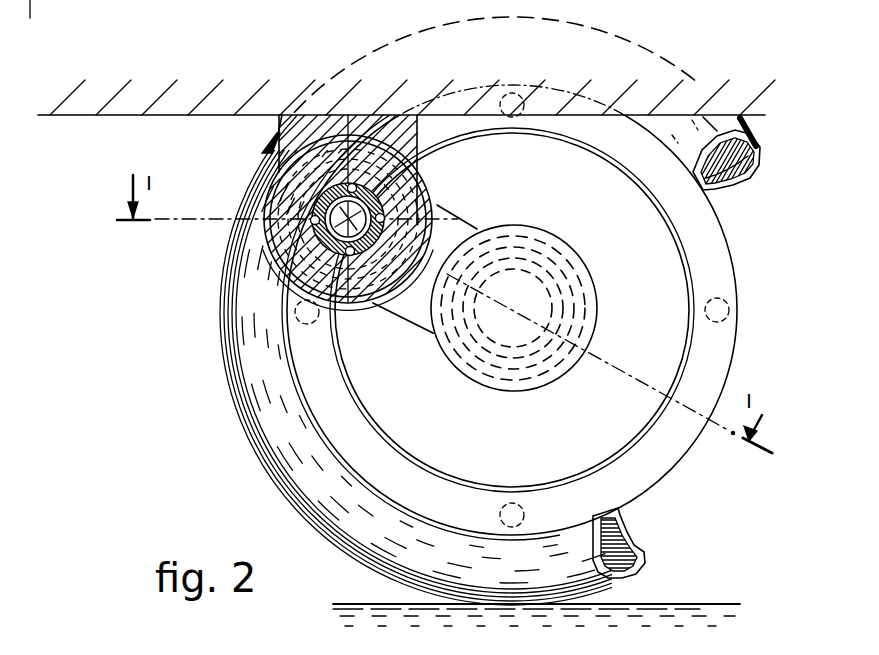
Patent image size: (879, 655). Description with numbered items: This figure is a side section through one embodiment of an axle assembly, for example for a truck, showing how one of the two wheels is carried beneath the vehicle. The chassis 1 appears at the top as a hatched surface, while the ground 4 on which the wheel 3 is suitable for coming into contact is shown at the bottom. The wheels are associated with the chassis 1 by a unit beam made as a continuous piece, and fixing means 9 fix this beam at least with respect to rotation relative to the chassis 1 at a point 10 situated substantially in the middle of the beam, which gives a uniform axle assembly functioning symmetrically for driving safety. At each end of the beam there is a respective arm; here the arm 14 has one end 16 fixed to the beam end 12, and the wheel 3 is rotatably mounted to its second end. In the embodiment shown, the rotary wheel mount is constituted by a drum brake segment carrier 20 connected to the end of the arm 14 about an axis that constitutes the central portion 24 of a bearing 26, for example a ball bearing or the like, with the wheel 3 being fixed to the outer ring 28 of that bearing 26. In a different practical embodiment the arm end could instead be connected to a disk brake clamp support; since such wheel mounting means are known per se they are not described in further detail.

The chassis 1 is at (76, 118).
The wheel 3 is at (248, 423).
The ground 4 is at (665, 605).
The fixing means 9 is at (276, 136).
The fixing point 10 is at (345, 224).
The beam end 12 is at (280, 294).
The arm 14 is at (412, 306).
The arm end 16 is at (330, 264).
The drum brake segment carrier 20 is at (588, 468).
The central portion of bearing 24 is at (566, 312).
The bearing 26 is at (572, 250).
The outer ring of bearing 28 is at (533, 252).